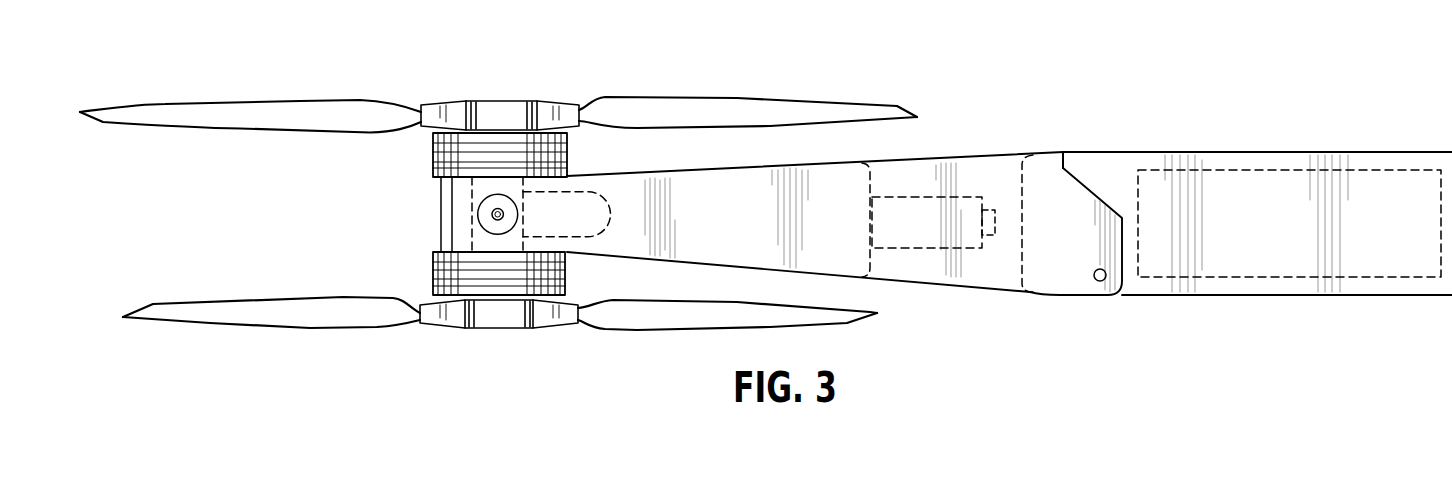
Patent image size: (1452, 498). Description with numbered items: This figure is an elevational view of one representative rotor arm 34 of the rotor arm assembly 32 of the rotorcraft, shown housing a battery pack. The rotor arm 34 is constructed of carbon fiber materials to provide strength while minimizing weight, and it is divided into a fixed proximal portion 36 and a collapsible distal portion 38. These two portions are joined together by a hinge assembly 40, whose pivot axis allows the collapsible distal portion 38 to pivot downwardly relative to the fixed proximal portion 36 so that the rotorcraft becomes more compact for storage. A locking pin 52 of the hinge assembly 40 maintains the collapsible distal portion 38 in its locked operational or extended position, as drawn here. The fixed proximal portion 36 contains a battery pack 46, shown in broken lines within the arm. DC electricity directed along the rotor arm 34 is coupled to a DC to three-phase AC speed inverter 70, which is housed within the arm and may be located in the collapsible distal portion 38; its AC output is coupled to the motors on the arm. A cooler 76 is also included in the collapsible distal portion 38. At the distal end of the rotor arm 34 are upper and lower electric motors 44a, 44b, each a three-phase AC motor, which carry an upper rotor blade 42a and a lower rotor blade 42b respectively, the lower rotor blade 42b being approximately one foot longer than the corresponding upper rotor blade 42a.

The rotor arm assembly 32 is at (1257, 156).
The rotor arm 34 is at (1257, 188).
The fixed proximal portion 36 is at (1268, 152).
The collapsible distal portion 38 is at (678, 173).
The hinge assembly 40 is at (1063, 150).
The upper rotor blade 42a is at (281, 100).
The lower rotor blade 42b is at (236, 327).
The upper electric motor 44a is at (433, 152).
The lower electric motor 44b is at (433, 272).
The battery pack 46 is at (1212, 170).
The locking pin 52 is at (1100, 281).
The DC to 3-phase AC speed inverter 70 is at (587, 190).
The cooler 76 is at (901, 197).